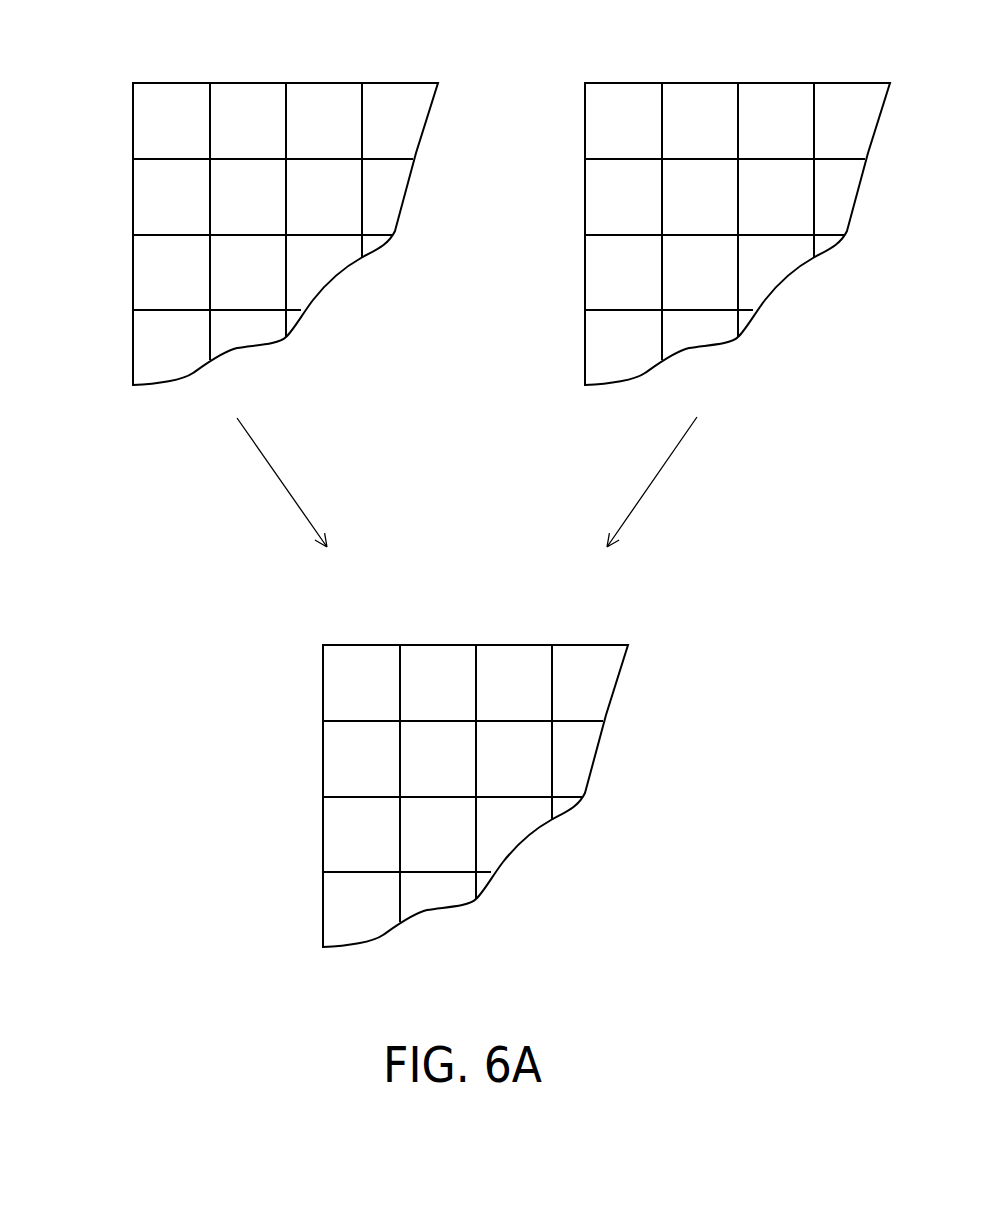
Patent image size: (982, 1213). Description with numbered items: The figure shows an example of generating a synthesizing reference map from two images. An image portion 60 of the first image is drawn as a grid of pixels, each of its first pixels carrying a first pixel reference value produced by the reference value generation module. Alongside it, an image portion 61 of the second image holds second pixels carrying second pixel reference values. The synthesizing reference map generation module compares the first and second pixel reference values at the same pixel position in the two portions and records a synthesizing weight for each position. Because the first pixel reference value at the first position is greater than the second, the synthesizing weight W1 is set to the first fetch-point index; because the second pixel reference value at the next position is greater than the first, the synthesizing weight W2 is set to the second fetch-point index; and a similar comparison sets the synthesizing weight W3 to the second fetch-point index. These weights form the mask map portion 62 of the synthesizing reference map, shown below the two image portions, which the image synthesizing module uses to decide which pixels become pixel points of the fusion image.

The image portion of the first image 60 is at (420, 83).
The image portion of the second image 61 is at (872, 83).
The mask map portion of the synthesizing reference map 62 is at (610, 643).
The synthesizing weight W1 is at (342, 657).
The synthesizing weight W2 is at (443, 657).
The synthesizing weight W3 is at (333, 777).